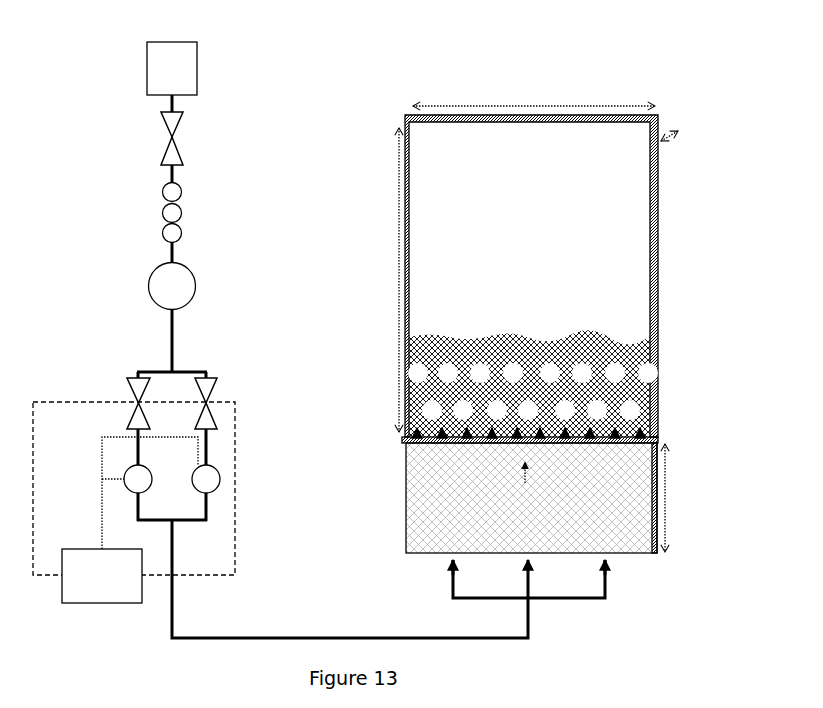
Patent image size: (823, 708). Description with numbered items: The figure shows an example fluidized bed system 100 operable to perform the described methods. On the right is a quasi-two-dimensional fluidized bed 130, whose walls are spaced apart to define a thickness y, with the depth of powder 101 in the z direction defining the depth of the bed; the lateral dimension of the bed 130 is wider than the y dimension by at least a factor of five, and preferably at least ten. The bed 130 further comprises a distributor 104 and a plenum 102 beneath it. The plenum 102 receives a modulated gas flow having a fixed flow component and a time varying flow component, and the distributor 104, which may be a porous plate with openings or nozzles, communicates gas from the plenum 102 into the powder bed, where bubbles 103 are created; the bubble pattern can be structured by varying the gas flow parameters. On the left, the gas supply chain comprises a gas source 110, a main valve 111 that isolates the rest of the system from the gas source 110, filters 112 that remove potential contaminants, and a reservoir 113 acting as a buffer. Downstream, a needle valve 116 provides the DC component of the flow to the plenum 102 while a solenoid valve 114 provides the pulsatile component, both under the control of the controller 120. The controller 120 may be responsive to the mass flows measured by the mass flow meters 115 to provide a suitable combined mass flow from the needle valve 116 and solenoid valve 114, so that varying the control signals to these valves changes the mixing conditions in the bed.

The fluidized bed system 100 is at (630, 70).
The powder 101 is at (487, 329).
The plenum 102 is at (482, 522).
The bubbles 103 is at (413, 370).
The distributor 104 is at (657, 437).
The gas source 110 is at (192, 78).
The main valve 111 is at (179, 124).
The filters 112 is at (178, 215).
The reservoir 113 is at (194, 288).
The solenoid valve 114 is at (215, 385).
The mass flow meters 115 is at (125, 477).
The needle valve 116 is at (128, 380).
The controller 120 is at (82, 590).
The quasi-2D fluidized bed 130 is at (657, 253).